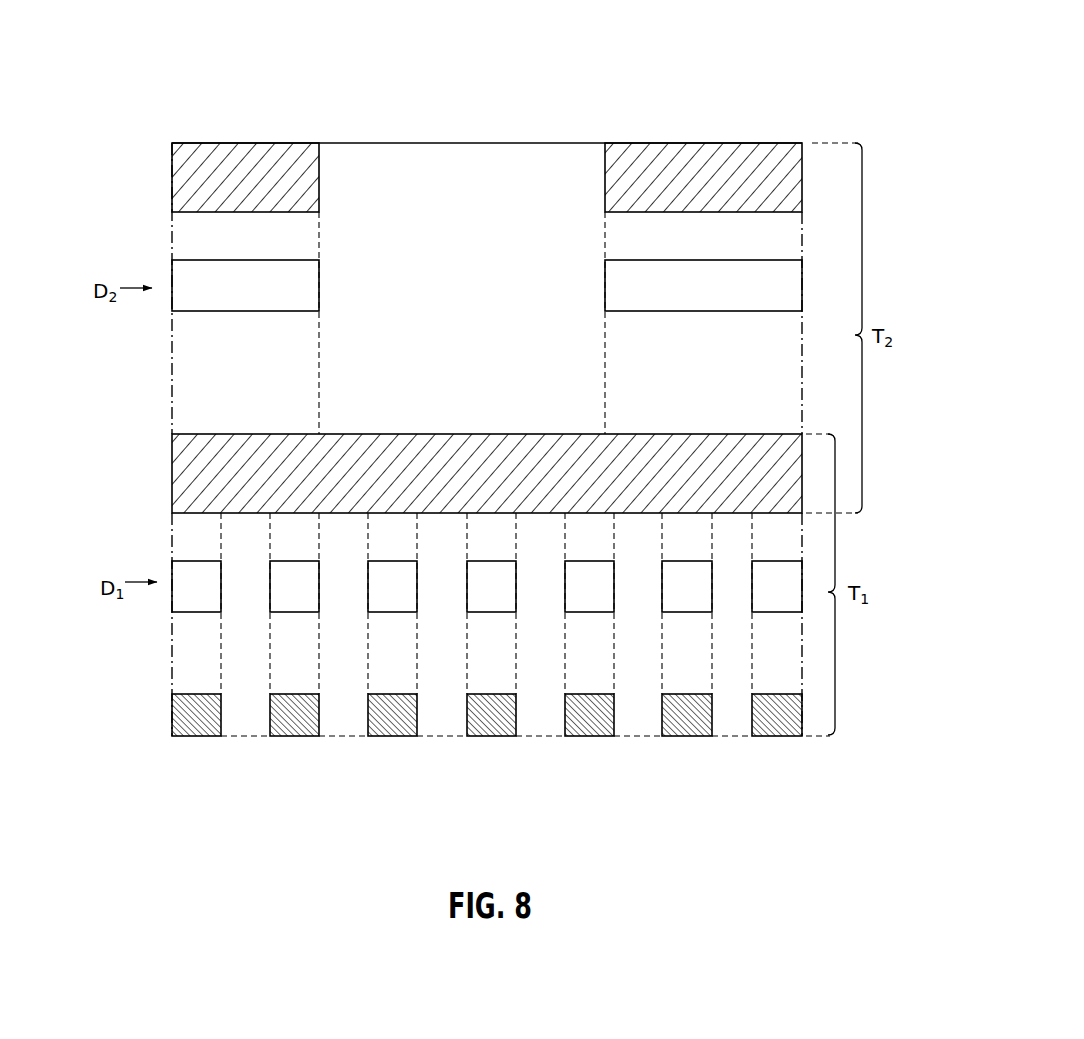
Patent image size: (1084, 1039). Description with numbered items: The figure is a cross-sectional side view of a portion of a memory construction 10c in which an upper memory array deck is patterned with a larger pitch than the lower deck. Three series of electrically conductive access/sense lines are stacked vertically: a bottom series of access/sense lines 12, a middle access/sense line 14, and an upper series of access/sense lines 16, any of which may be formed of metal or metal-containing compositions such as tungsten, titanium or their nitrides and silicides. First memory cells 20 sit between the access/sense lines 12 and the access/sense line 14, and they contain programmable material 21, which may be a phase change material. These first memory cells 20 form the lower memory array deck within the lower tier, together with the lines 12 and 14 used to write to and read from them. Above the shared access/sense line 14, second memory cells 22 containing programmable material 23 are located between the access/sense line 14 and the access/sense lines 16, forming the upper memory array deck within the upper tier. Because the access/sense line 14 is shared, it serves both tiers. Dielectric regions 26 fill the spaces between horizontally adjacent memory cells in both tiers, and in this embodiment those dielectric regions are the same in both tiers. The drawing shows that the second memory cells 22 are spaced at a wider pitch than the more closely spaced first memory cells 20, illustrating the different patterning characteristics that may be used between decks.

The construction 10c is at (801, 76).
The access/sense lines 12 is at (196, 746).
The access/sense line 14 is at (166, 479).
The access/sense lines 16 is at (245, 134).
The first memory cells 20 is at (223, 580).
The programmable material 21 is at (183, 595).
The second memory cells 22 is at (324, 270).
The programmable material 23 is at (260, 297).
The dielectric regions 26 is at (465, 346).